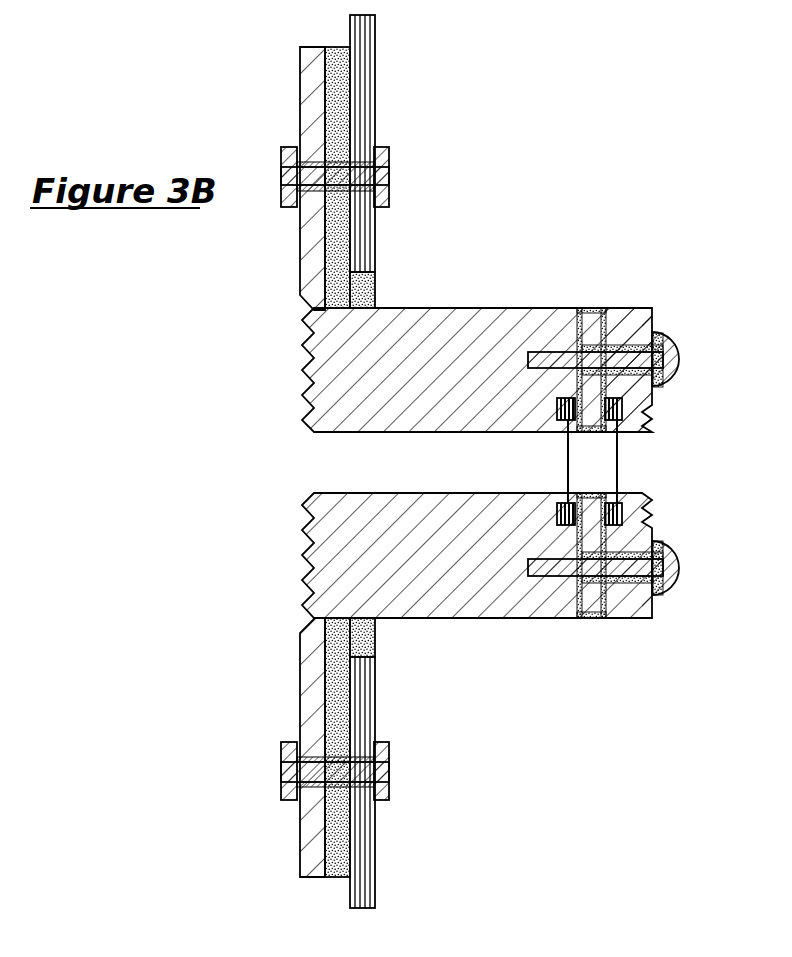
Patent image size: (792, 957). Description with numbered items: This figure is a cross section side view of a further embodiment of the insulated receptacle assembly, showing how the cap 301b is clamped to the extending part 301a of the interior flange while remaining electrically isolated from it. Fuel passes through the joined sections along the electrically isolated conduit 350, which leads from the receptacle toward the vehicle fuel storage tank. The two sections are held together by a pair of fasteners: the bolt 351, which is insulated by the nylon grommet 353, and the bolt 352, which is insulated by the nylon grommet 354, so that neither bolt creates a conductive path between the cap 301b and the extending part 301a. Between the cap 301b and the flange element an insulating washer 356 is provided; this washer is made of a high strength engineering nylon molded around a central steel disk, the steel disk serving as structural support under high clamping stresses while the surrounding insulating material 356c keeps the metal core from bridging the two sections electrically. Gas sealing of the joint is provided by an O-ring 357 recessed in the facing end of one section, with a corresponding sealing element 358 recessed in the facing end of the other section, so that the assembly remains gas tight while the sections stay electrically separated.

The extending part of the interior flange 301a is at (432, 330).
The cap 301b is at (645, 315).
The conduit 350 is at (318, 460).
The bolt 351 is at (678, 357).
The bolt 352 is at (673, 569).
The nylon grommet 353 is at (647, 582).
The nylon grommet 354 is at (648, 322).
The insulating washer 356 is at (587, 320).
The insulating material 356c is at (596, 618).
The O-ring 357 is at (603, 308).
The threaded rod 358 is at (618, 472).